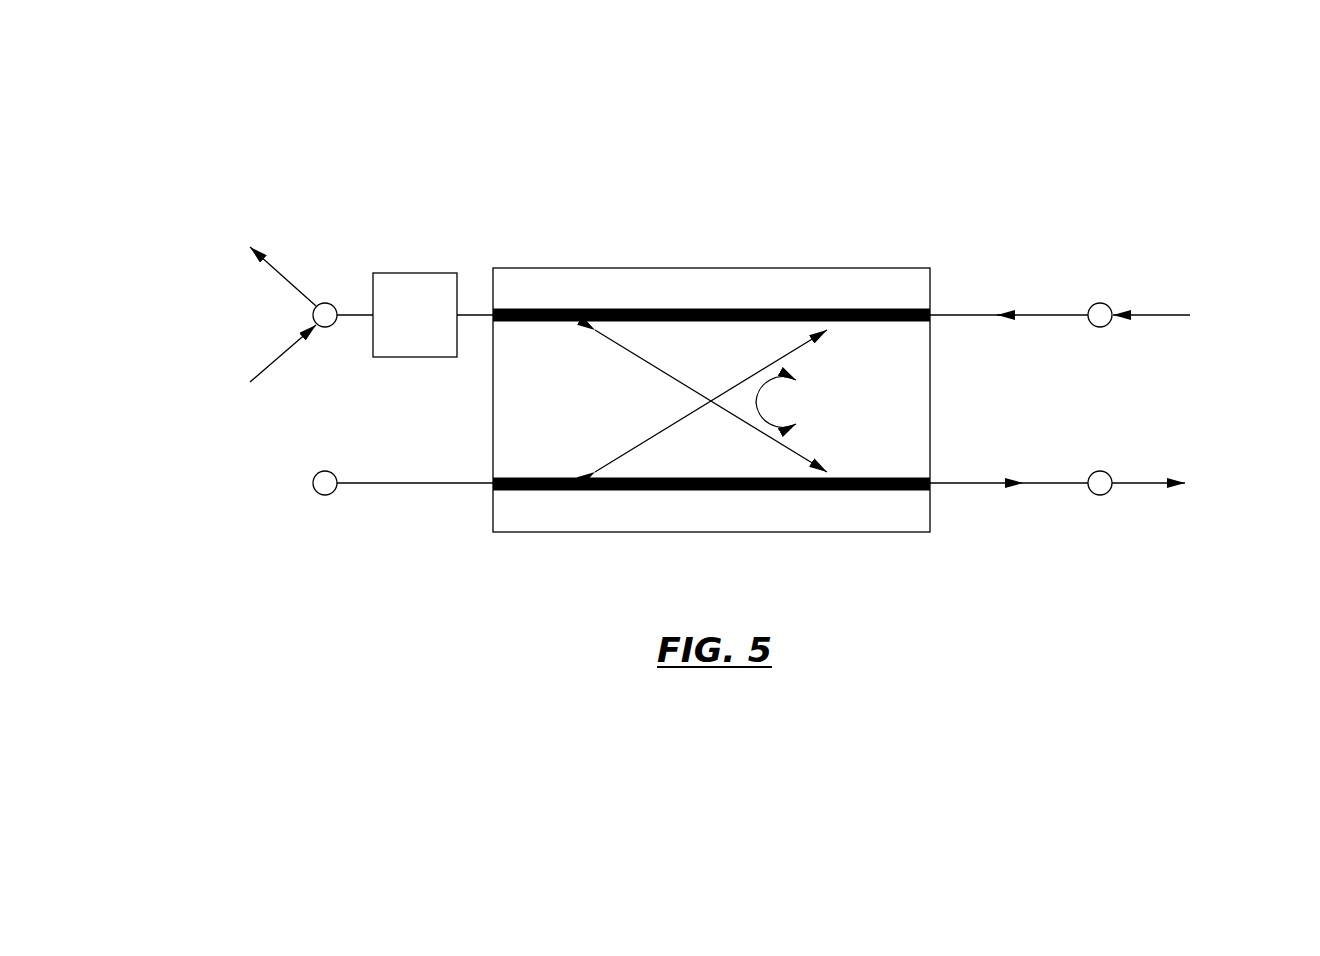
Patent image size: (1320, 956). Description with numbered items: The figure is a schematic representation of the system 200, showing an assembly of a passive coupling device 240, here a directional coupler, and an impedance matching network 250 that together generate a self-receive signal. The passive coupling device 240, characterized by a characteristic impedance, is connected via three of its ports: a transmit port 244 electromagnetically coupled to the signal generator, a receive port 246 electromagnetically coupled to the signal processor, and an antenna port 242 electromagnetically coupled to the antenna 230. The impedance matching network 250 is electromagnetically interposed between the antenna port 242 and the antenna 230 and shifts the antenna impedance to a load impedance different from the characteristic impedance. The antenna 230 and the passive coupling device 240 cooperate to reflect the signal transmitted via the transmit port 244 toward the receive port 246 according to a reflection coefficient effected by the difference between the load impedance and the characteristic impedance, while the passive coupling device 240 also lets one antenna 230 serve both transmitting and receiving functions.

The system 200 is at (243, 123).
The antenna 230 is at (312, 316).
The passive coupling device 240 is at (689, 268).
The antenna port 242 is at (492, 320).
The transmit port 244 is at (933, 310).
The receive port 246 is at (933, 490).
The impedance matching network 250 is at (417, 272).